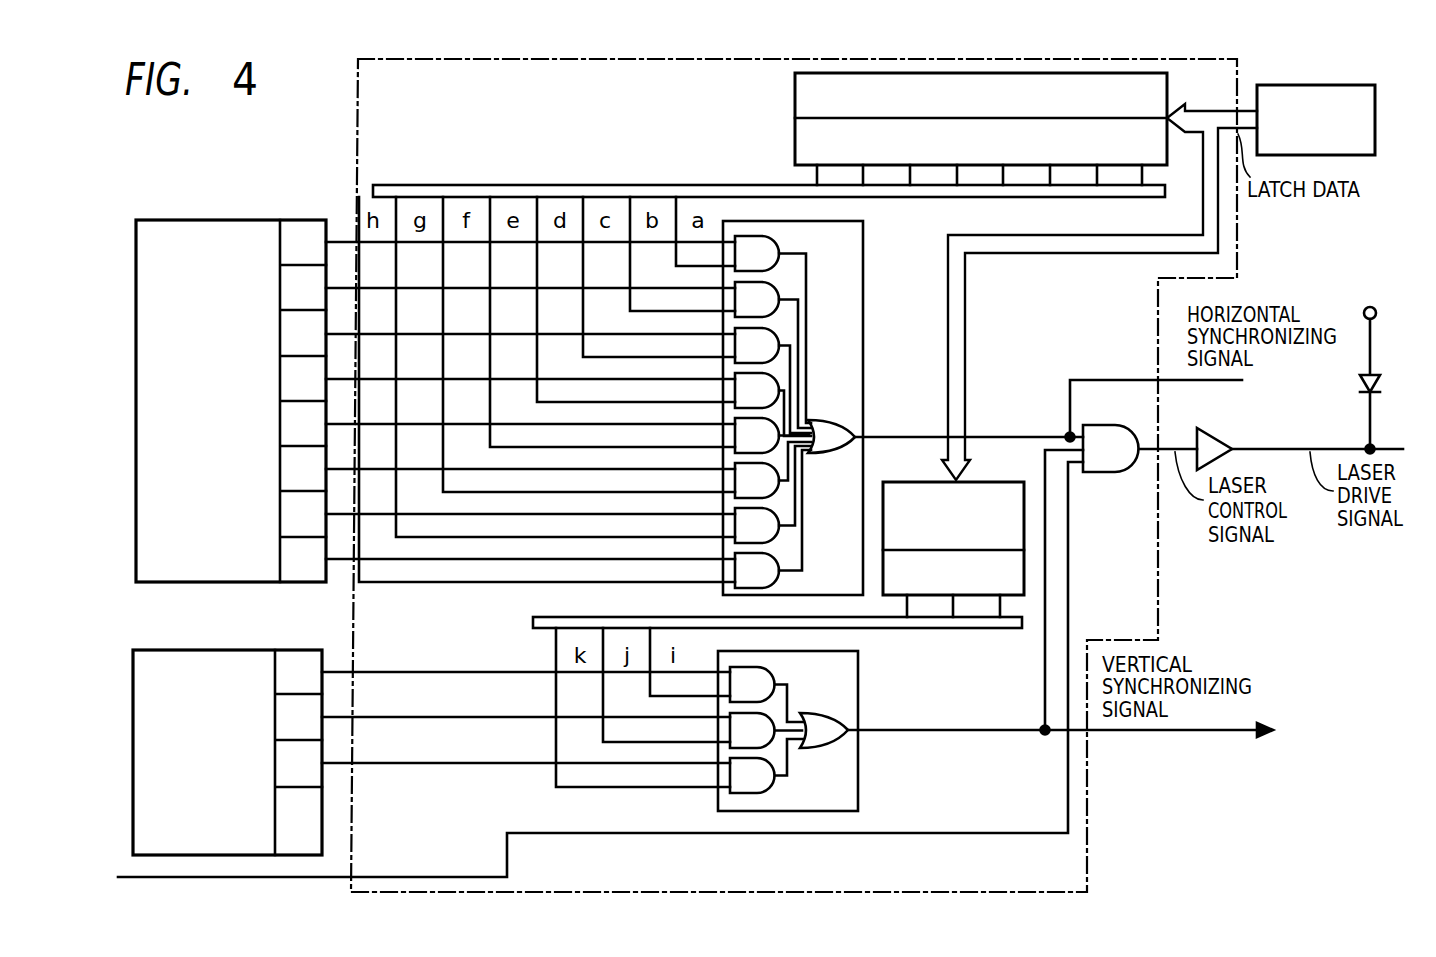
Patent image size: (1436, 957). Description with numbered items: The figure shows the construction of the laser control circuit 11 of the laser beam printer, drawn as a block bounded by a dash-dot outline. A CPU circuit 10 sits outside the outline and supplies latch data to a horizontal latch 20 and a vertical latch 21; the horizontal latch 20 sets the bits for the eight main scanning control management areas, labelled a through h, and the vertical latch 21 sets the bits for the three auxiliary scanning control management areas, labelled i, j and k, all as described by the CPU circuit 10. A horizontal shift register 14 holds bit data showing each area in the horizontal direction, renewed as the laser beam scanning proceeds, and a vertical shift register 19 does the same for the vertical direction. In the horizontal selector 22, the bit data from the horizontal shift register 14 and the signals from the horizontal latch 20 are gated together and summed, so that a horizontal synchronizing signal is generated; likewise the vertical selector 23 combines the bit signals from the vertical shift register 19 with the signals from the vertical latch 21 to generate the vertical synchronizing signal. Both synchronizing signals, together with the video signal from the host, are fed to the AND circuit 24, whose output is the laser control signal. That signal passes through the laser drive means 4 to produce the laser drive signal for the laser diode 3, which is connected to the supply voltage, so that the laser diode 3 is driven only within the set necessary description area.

The laser diode 3 is at (1378, 395).
The laser drive means 4 is at (1212, 434).
The CPU circuit 10 is at (1375, 92).
The laser control circuit 11 is at (358, 103).
The horizontal shift register 14 is at (285, 220).
The vertical shift register 19 is at (287, 650).
The horizontal latch 20 is at (1170, 81).
The vertical latch 21 is at (985, 481).
The horizontal selector 22 is at (865, 232).
The vertical selector 23 is at (860, 660).
The AND circuit 24 is at (1100, 478).